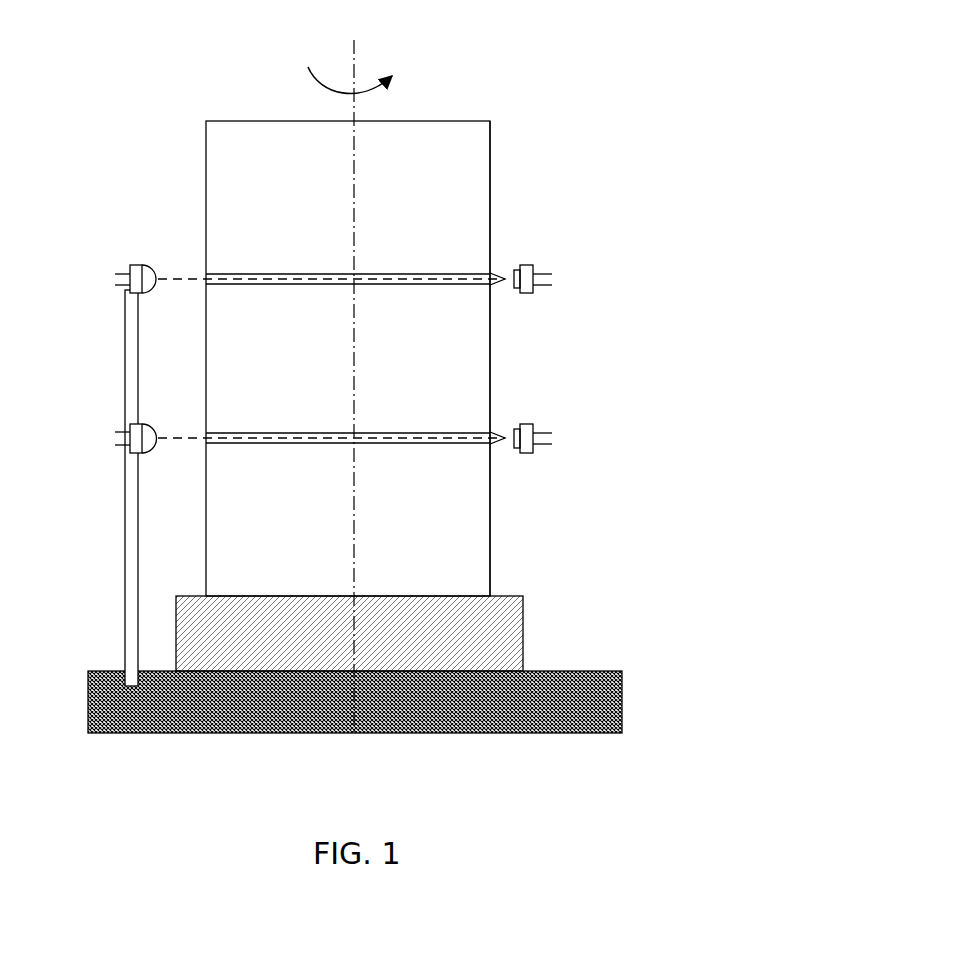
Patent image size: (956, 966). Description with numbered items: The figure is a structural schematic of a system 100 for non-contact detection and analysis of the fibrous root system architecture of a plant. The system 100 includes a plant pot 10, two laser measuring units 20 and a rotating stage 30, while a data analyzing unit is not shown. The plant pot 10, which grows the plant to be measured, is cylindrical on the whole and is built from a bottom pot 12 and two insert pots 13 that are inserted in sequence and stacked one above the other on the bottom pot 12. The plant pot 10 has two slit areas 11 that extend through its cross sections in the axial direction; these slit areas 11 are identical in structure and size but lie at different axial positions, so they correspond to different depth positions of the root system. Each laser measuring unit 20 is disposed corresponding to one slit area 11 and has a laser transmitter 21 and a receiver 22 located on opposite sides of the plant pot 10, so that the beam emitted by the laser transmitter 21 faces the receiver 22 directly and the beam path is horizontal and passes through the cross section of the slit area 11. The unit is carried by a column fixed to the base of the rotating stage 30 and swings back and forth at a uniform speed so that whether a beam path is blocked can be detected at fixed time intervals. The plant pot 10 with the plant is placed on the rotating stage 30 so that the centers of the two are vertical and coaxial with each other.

The system for detection and analysis 100 is at (486, 96).
The plant pot 10 is at (526, 248).
The slit area 11 is at (233, 284).
The bottom pot 12 is at (462, 532).
The insert pot 13 is at (248, 181).
The laser measuring unit 20 is at (372, 450).
The laser transmitter 21 is at (120, 443).
The receiver 22 is at (545, 432).
The rotating stage 30 is at (497, 634).